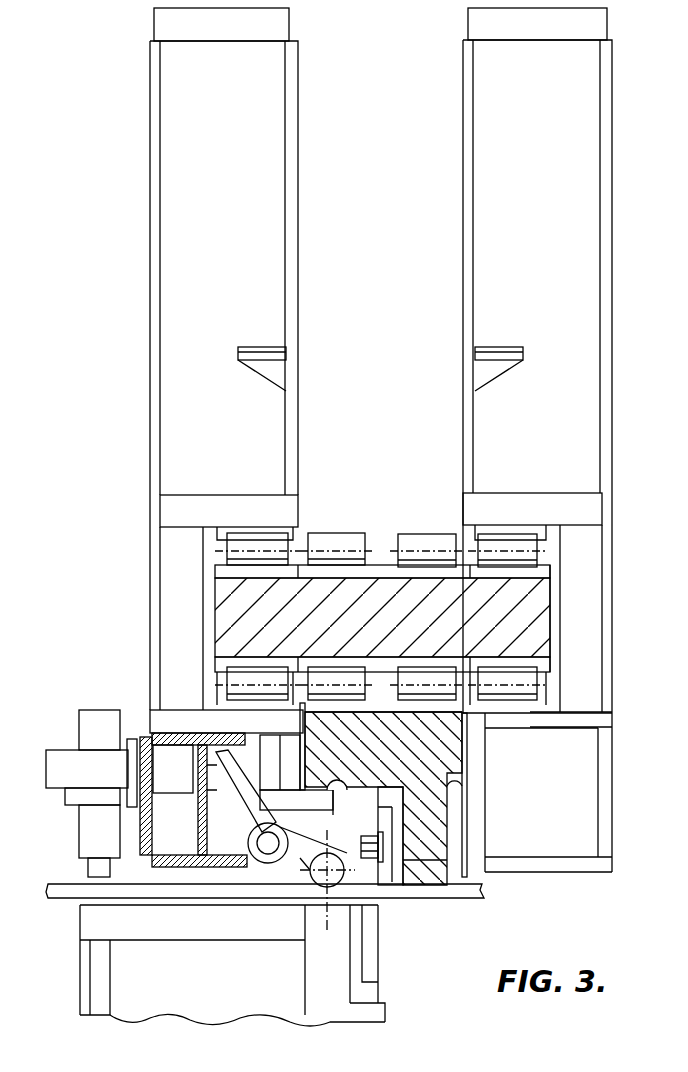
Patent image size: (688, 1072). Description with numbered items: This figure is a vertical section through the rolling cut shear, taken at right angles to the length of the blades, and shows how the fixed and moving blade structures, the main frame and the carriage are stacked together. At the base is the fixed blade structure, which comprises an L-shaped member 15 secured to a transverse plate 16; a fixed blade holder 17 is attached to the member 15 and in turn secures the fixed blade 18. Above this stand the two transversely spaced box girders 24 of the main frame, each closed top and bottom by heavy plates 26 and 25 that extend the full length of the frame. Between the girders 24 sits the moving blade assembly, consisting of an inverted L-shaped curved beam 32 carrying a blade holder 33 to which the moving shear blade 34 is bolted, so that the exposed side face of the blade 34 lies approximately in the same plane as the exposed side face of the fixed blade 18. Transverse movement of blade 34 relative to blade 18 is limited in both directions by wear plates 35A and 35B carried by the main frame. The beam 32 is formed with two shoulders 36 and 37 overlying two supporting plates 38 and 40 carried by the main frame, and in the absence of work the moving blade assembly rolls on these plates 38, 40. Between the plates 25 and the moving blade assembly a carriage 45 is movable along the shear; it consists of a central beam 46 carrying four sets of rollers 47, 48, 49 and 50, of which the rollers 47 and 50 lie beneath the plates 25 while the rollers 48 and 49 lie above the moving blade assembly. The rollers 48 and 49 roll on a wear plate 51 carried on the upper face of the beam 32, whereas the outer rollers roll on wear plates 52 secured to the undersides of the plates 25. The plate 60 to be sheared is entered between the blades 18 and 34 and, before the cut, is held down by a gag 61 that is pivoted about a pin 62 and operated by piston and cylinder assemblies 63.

The L-shaped member 15 is at (313, 1017).
The transverse plate 16 is at (188, 930).
The fixed blade holder 17 is at (363, 993).
The fixed blade 18 is at (368, 950).
The box girder 24 is at (153, 117).
The bottom plate 25 is at (175, 512).
The top plate 26 is at (162, 23).
The curved beam 32 is at (440, 743).
The blade holder 33 is at (398, 828).
The moving shear blade 34 is at (383, 865).
The wear plate 35A is at (467, 872).
The wear plate 35B is at (300, 752).
The shoulder 36 is at (332, 789).
The shoulder 37 is at (467, 770).
The supporting plate 38 is at (320, 797).
The supporting plate 40 is at (462, 785).
The carriage 45 is at (205, 625).
The central beam 46 is at (218, 579).
The rollers 47 is at (244, 540).
The rollers 48 is at (336, 541).
The rollers 49 is at (430, 545).
The rollers 50 is at (516, 540).
The wear plate 51 is at (390, 707).
The wear plates 52 is at (266, 532).
The plate 60 is at (70, 886).
The gag 61 is at (363, 883).
The pin 62 is at (268, 843).
The piston and cylinder assemblies 63 is at (65, 762).